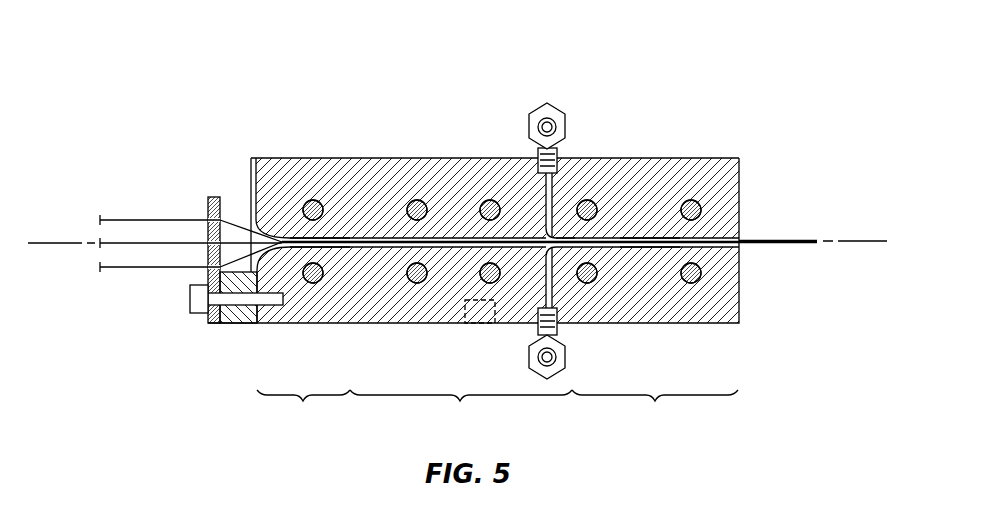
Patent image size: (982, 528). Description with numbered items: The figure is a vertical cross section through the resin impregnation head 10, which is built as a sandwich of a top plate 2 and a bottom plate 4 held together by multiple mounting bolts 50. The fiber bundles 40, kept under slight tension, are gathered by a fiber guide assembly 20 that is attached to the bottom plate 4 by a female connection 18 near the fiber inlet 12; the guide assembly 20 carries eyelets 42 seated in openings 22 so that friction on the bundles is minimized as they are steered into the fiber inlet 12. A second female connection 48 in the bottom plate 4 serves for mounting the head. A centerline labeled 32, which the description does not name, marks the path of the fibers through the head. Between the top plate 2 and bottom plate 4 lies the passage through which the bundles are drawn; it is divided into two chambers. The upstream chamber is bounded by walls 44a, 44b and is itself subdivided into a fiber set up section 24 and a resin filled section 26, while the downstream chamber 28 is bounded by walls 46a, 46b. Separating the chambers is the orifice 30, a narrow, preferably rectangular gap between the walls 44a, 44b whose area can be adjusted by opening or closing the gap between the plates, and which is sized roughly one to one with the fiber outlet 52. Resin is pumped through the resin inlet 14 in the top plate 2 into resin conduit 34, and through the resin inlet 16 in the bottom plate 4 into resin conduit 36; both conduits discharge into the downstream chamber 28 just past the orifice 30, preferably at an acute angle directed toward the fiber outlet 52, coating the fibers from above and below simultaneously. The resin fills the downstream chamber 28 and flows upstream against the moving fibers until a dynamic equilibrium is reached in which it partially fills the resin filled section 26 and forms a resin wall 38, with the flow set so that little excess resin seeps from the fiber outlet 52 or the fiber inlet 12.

The top plate 2 is at (300, 158).
The bottom plate 4 is at (302, 325).
The impregnation head 10 is at (600, 71).
The fiber inlet 12 is at (252, 220).
The resin inlet 14 is at (553, 150).
The resin inlet 16 is at (557, 330).
The female connection 18 is at (253, 325).
The fiber guide assembly 20 is at (237, 327).
The openings 22 is at (208, 214).
The fiber set up section 24 is at (303, 411).
The resin filled section 26 is at (461, 411).
The downstream chamber 28 is at (655, 411).
The orifice 30 is at (578, 230).
The optical axis 32 is at (457, 228).
The resin conduit 34 is at (545, 204).
The resin conduit 36 is at (553, 298).
The resin wall 38 is at (349, 232).
The fiber bundles 40 is at (155, 220).
The eyelets 42 is at (208, 266).
The upstream chamber wall 44a is at (352, 240).
The upstream chamber wall 44b is at (352, 247).
The downstream chamber wall 46a is at (651, 237).
The downstream chamber wall 46b is at (630, 247).
The female connection 48 is at (465, 323).
The mounting bolts 50 is at (702, 203).
The fiber outlet 52 is at (748, 233).